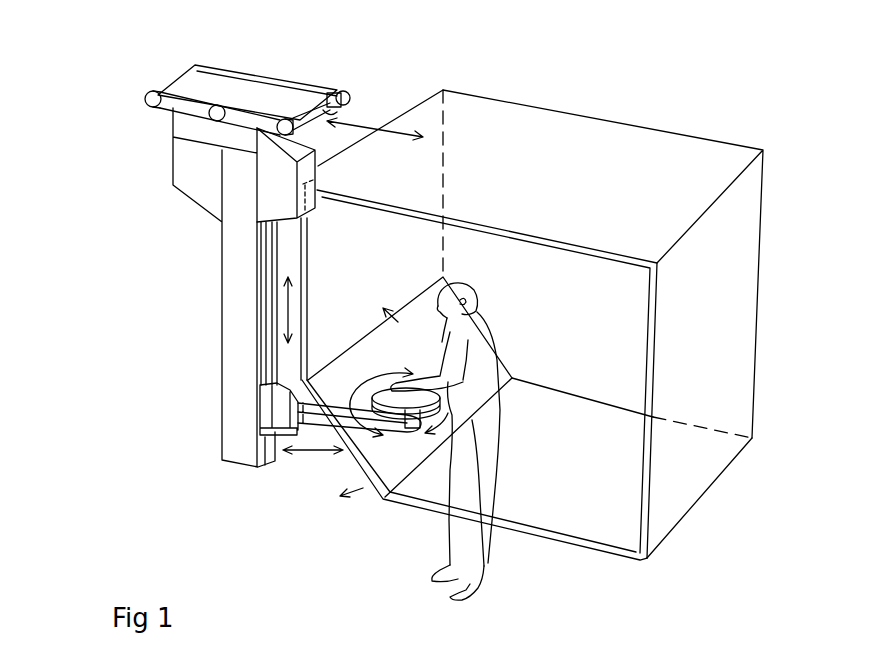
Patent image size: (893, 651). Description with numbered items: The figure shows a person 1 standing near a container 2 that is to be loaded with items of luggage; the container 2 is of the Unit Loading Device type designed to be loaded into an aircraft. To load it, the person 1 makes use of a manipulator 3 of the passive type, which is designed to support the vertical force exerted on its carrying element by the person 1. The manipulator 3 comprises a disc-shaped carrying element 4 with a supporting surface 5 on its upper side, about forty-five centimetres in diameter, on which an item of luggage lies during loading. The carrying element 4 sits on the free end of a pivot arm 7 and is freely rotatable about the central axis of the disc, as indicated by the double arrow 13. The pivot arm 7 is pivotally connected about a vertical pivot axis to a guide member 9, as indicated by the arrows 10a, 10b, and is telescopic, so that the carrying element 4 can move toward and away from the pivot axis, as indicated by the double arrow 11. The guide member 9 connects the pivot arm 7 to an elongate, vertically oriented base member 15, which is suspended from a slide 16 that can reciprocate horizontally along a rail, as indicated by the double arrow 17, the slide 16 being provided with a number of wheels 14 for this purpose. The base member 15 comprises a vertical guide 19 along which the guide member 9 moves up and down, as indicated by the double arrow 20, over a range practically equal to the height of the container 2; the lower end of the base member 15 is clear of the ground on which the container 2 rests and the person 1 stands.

The person 1 is at (485, 450).
The container 2 is at (745, 220).
The manipulator 3 is at (125, 325).
The carrying element 4 is at (405, 422).
The supporting surface 5 is at (383, 393).
The pivot arm 7 is at (333, 407).
The guide member 9 is at (275, 386).
The arrow 10a is at (364, 488).
The arrow 10b is at (407, 357).
The double arrow 11 is at (292, 462).
The double arrow 13 is at (367, 382).
The wheels 14 is at (343, 91).
The base member 15 is at (227, 337).
The slide 16 is at (253, 85).
The double arrow 17 is at (367, 123).
The vertical guide 19 is at (267, 250).
The double arrow 20 is at (293, 303).